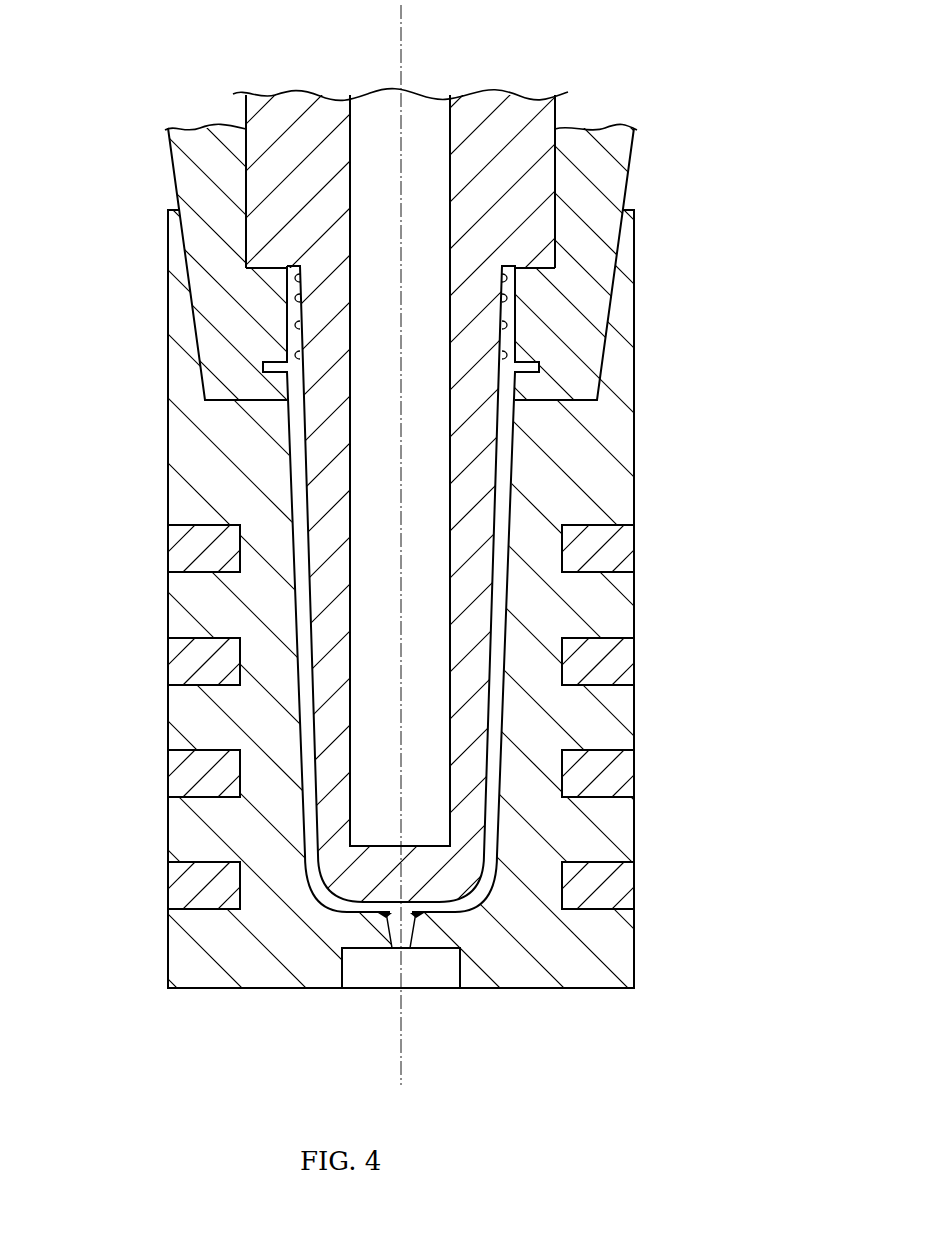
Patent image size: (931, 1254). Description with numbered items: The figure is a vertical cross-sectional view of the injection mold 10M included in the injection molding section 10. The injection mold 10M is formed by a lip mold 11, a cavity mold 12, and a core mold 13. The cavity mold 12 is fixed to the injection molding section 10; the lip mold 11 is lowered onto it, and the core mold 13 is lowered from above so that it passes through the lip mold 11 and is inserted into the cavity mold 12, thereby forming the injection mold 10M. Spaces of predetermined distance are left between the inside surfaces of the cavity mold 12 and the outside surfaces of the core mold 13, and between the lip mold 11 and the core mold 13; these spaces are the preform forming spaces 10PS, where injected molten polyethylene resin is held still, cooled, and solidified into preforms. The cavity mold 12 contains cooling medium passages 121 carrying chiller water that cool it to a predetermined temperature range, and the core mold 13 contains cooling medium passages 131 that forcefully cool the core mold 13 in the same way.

The injection molding section 10 is at (118, 40).
The injection mold 10M is at (647, 386).
The preform forming spaces 10PS is at (298, 467).
The lip mold 11 is at (628, 170).
The cavity mold 12 is at (257, 722).
The cooling medium passages 121 is at (192, 553).
The core mold 13 is at (468, 812).
The cooling medium passages 131 is at (405, 708).